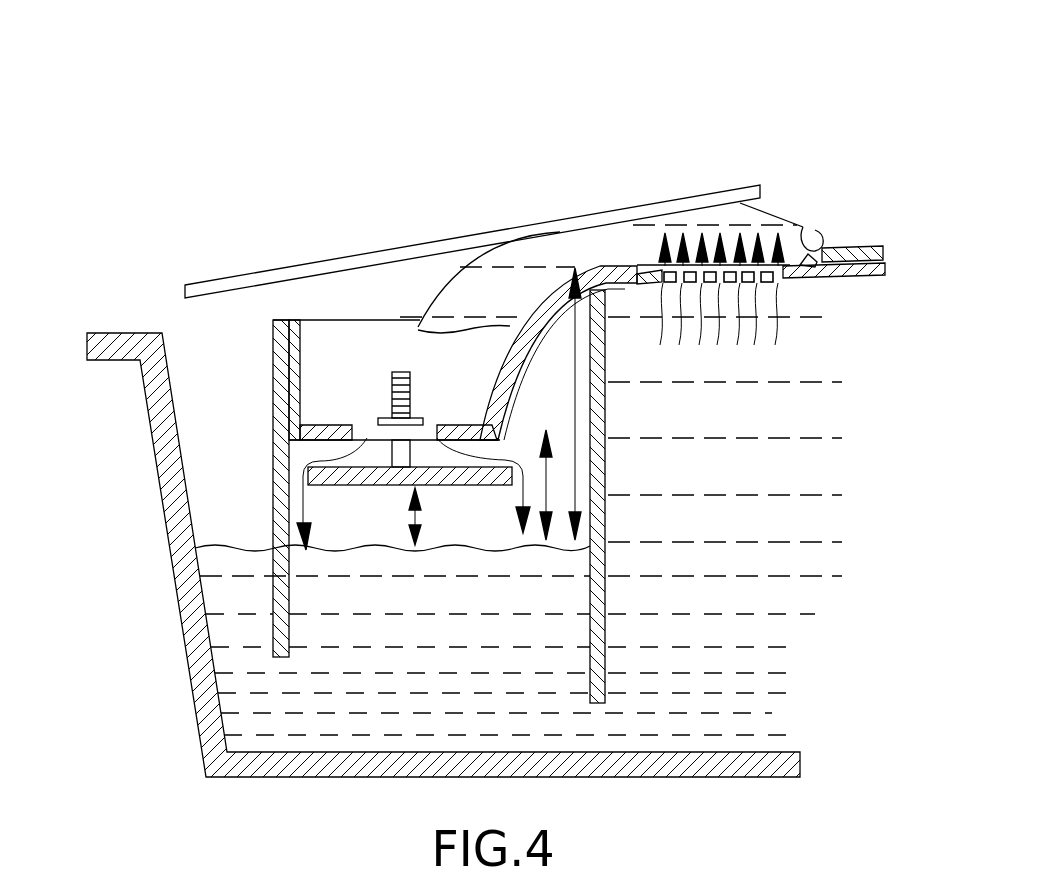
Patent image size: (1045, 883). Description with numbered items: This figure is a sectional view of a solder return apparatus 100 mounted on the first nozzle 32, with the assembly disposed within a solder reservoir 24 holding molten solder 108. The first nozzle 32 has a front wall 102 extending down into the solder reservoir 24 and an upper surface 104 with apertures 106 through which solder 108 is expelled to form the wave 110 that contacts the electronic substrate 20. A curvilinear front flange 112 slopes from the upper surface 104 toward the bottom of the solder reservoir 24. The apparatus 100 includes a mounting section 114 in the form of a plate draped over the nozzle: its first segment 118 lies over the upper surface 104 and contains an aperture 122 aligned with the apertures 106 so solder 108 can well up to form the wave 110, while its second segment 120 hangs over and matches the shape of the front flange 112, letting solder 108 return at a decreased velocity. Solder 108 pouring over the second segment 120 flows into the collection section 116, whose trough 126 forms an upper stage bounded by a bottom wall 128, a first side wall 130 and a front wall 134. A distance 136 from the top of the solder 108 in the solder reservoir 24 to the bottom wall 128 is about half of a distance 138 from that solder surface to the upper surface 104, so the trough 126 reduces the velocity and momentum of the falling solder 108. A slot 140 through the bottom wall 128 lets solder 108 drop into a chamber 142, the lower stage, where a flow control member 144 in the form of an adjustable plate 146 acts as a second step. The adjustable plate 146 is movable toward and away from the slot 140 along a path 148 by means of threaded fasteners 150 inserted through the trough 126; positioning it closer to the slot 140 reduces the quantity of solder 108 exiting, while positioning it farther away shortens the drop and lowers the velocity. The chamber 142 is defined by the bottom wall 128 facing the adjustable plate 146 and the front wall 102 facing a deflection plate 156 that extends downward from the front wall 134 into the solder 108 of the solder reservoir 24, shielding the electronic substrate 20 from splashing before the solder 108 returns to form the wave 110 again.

The electronic substrate 20 is at (693, 193).
The solder reservoir 24 is at (192, 692).
The first nozzle 32 is at (817, 707).
The solder return apparatus 100 is at (167, 302).
The front wall 102 is at (606, 513).
The upper surface 104 is at (823, 267).
The apertures 106 is at (783, 270).
The solder 108 is at (573, 247).
The wave 110 is at (773, 202).
The front flange 112 is at (528, 345).
The mounting section 114 is at (845, 243).
The collection section 116 is at (335, 303).
The first segment 118 is at (862, 248).
The second segment 120 is at (543, 305).
The aperture 122 is at (808, 225).
The trough 126 is at (407, 320).
The bottom wall 128 is at (337, 424).
The first side wall 130 is at (377, 345).
The front wall 134 is at (298, 335).
The distance 136 is at (545, 485).
The distance 138 is at (570, 404).
The slot 140 is at (367, 438).
The chamber 142 is at (293, 455).
The flow control member 144 is at (310, 503).
The adjustable plate 146 is at (337, 486).
The path 148 is at (422, 517).
The fasteners 150 is at (412, 391).
The deflection plate 156 is at (272, 500).